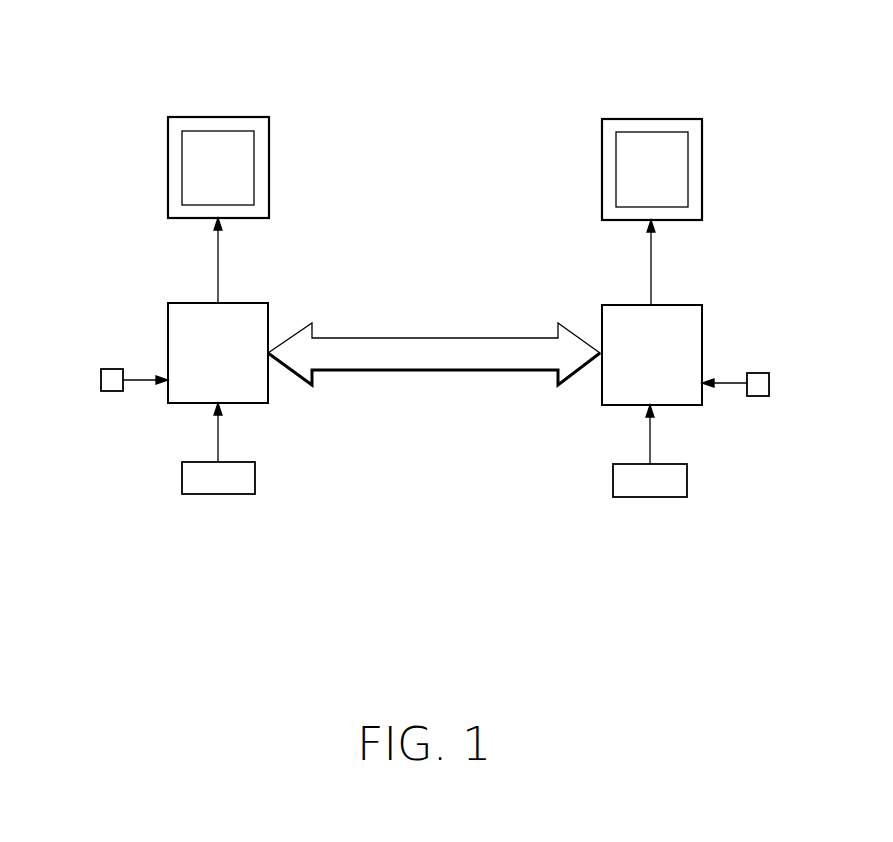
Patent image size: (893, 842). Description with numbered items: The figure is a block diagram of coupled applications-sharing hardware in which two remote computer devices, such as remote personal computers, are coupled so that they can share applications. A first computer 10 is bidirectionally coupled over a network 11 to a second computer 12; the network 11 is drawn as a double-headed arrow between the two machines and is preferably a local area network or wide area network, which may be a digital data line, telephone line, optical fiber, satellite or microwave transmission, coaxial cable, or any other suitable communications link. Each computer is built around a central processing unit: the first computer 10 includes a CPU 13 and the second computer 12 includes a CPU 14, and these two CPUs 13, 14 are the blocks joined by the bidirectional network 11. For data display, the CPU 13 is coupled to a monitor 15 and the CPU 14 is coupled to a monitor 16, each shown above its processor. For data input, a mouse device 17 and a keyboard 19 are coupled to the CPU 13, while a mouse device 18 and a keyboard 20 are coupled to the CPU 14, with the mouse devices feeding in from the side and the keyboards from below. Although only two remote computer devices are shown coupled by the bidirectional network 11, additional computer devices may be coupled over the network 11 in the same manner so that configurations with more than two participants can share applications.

The first computer 10 is at (170, 52).
The second computer 12 is at (713, 52).
The network 11 is at (458, 370).
The central processing unit 13 is at (168, 325).
The central processing unit 14 is at (702, 346).
The monitor 15 is at (168, 178).
The monitor 16 is at (702, 176).
The mouse device 17 is at (101, 381).
The mouse device 18 is at (769, 380).
The keyboard 19 is at (218, 494).
The keyboard 20 is at (650, 497).